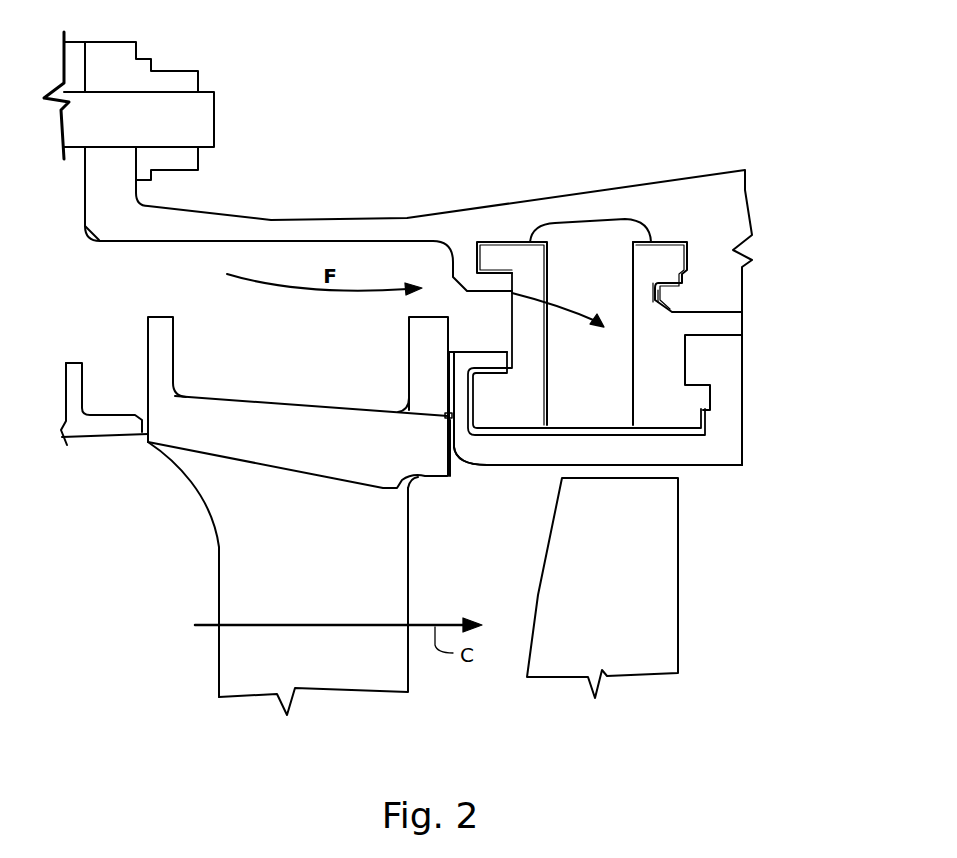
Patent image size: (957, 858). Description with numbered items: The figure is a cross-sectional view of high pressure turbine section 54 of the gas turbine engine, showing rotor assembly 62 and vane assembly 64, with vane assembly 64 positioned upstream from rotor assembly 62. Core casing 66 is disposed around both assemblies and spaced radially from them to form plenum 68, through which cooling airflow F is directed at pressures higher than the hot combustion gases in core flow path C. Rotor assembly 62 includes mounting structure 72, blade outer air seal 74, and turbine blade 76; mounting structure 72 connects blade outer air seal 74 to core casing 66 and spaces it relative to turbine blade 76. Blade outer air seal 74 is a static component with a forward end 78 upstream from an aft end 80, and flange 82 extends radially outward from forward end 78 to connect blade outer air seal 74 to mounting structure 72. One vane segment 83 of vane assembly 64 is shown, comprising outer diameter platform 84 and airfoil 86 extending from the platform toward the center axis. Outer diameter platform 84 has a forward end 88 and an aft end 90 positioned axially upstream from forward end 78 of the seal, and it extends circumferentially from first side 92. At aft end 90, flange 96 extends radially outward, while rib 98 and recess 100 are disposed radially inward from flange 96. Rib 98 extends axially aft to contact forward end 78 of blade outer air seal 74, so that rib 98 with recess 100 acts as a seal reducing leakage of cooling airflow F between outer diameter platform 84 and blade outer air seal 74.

The high pressure turbine section 54 is at (364, 71).
The rotor assembly 62 is at (713, 520).
The vane assembly 64 is at (147, 528).
The core casing 66 is at (493, 217).
The plenum 68 is at (115, 287).
The mounting structure 72 is at (653, 342).
The blade outer air seal 74 is at (697, 456).
The turbine blade 76 is at (663, 612).
The forward end 78 is at (468, 457).
The aft end 80 is at (741, 428).
The flange 82 is at (475, 403).
The vane segment 83 is at (240, 595).
The outer diameter platform 84 is at (270, 423).
The airfoil 86 is at (245, 655).
The forward end 88 is at (150, 418).
The aft end 90 is at (457, 477).
The first side 92 is at (393, 453).
The flange 96 is at (428, 345).
The rib 98 is at (447, 408).
The recess 100 is at (445, 415).